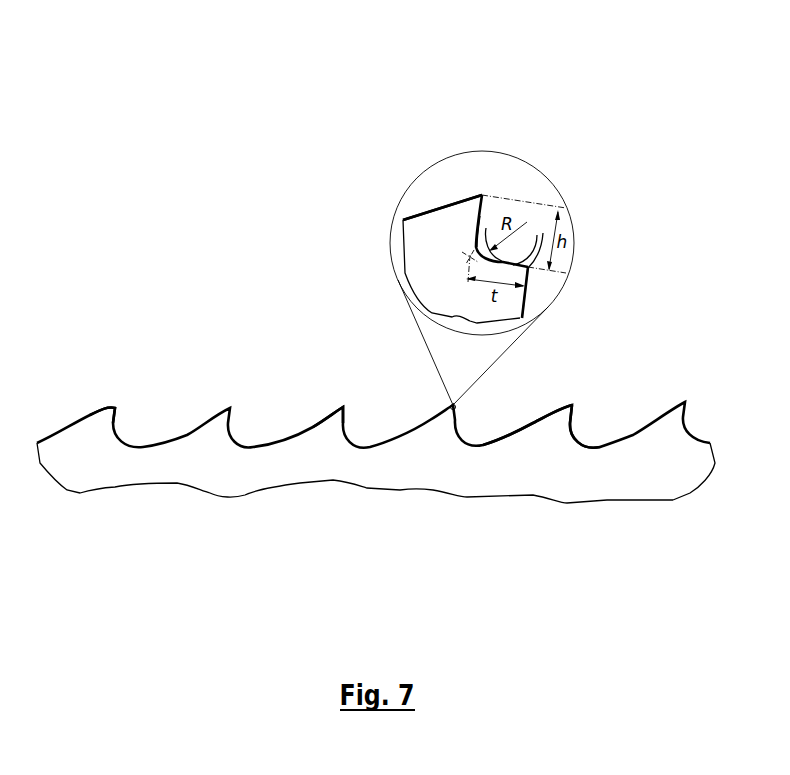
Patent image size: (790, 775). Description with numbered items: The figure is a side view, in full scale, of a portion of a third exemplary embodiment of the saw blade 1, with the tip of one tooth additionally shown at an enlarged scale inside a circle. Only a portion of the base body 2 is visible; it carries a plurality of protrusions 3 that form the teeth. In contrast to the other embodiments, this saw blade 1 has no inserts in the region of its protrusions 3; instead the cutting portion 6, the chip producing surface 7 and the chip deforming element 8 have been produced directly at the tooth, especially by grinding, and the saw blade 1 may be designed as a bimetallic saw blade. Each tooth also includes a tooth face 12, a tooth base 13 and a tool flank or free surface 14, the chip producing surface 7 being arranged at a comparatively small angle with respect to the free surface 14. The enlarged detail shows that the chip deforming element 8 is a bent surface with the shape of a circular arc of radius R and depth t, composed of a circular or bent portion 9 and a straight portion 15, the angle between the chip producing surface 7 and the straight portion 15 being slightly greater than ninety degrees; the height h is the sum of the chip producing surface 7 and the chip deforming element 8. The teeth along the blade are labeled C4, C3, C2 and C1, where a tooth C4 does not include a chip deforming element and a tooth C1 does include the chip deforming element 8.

The saw blade 1 is at (329, 136).
The base body 2 is at (110, 470).
The protrusion 3 is at (99, 427).
The cutting portion 6 is at (230, 407).
The chip producing surface 7 is at (480, 216).
The chip deforming element 8 is at (537, 235).
The circular or bent portion 9 is at (486, 228).
The tooth face 12 is at (575, 422).
The tooth base 13 is at (267, 443).
The free surface 14 is at (447, 206).
The straight portion 15 is at (543, 233).
The tooth C1 is at (667, 428).
The tooth C2 is at (438, 430).
The tooth C3 is at (214, 433).
The tooth C4 is at (98, 435).